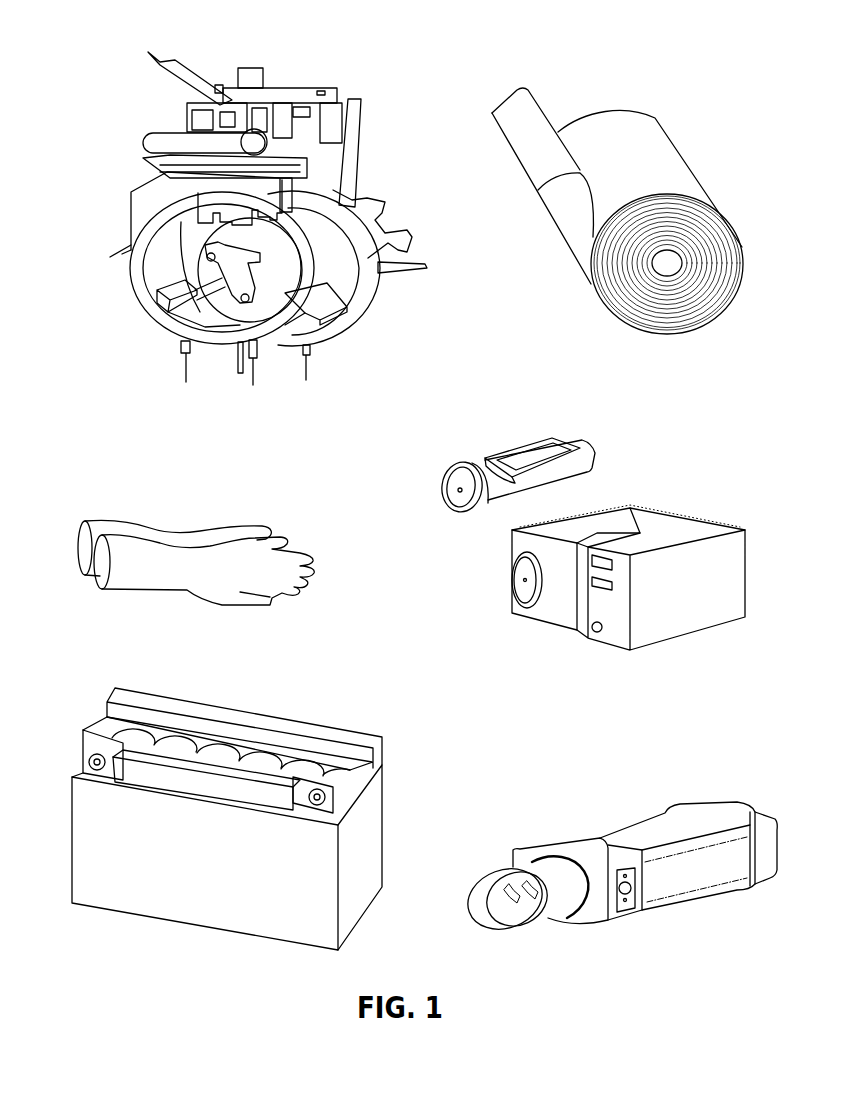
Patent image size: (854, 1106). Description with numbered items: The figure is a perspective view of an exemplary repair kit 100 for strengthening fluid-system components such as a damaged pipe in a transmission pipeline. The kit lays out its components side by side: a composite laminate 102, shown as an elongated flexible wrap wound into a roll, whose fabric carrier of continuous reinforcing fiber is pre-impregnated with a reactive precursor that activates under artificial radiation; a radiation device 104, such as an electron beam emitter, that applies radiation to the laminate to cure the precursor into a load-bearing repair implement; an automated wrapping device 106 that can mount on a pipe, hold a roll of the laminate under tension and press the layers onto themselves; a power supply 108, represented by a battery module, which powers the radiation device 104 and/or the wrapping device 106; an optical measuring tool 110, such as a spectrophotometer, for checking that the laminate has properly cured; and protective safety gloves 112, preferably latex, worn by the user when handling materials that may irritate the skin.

The repair kit 100 is at (185, 965).
The composite laminate 102 is at (662, 152).
The radiation device 104 is at (675, 462).
The automated wrapping device 106 is at (392, 88).
The power supply 108 is at (320, 700).
The optical measuring tool 110 is at (677, 785).
The safety gloves 112 is at (195, 505).